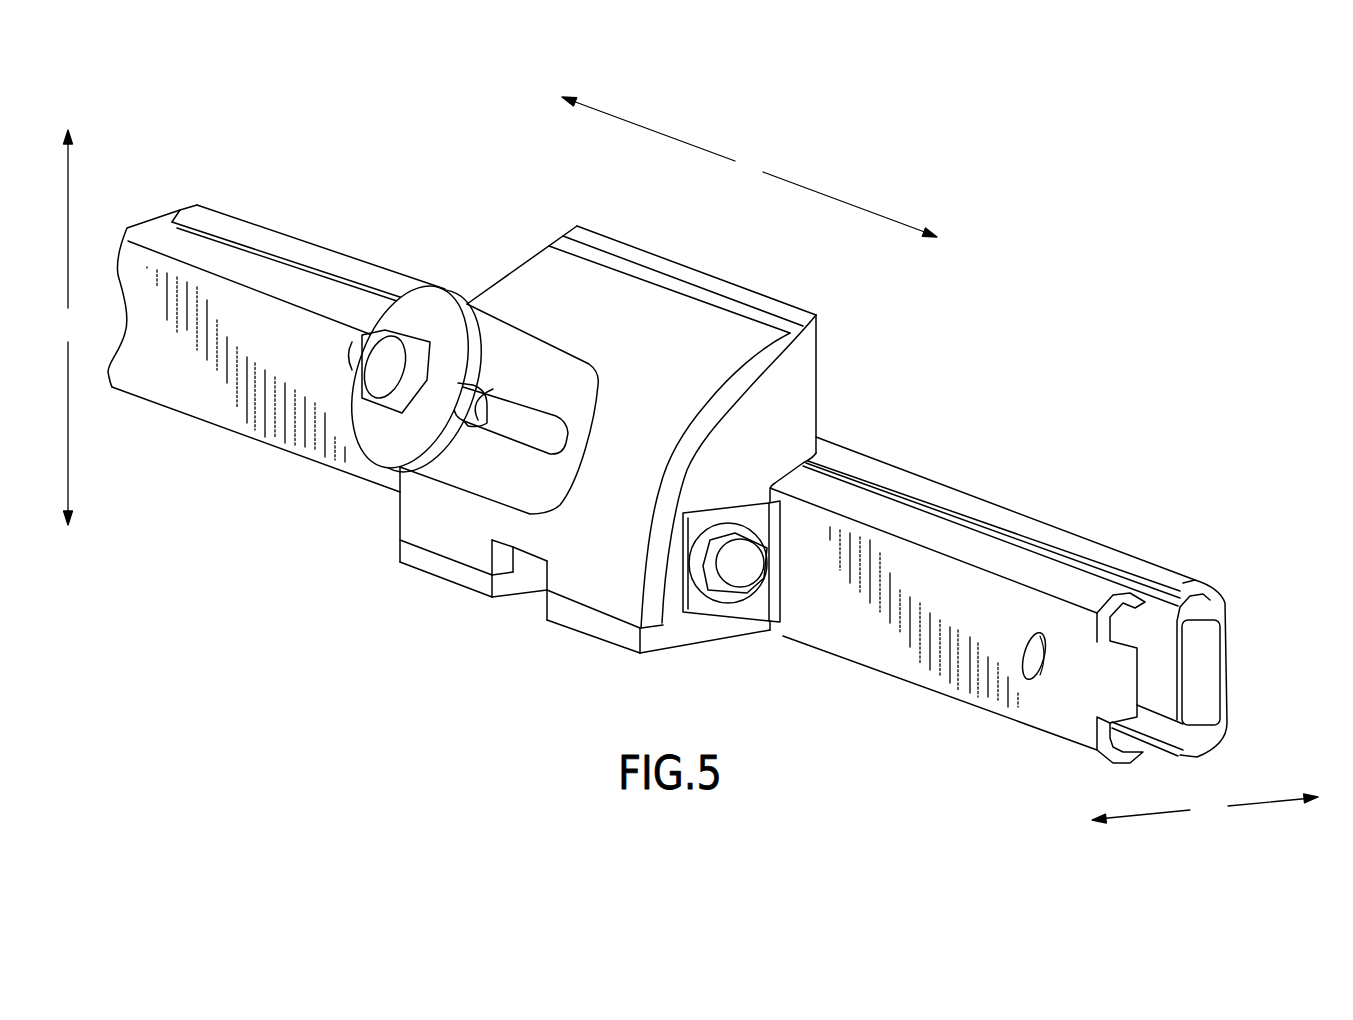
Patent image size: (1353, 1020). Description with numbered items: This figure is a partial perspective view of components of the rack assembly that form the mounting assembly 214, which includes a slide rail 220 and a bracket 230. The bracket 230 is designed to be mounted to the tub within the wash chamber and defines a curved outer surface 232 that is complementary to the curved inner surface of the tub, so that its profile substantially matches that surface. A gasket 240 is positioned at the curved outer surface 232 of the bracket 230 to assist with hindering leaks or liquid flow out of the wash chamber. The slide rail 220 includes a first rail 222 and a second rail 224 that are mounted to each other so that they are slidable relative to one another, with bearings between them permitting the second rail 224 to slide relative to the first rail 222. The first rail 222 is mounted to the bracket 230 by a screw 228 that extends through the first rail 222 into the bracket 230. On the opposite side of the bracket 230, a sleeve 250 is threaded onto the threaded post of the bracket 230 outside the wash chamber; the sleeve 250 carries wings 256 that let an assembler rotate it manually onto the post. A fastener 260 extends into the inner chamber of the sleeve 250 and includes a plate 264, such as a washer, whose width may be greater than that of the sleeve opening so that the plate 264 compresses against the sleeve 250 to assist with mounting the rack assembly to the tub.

The mounting assembly 214 is at (689, 460).
The slide rail 220 is at (167, 232).
The first rail 222 is at (1023, 617).
The second rail 224 is at (1195, 602).
The screw 228 is at (737, 573).
The bracket 230 is at (656, 442).
The curved outer surface 232 is at (720, 405).
The gasket 240 is at (522, 270).
The sleeve 250 is at (503, 414).
The wings 256 is at (523, 430).
The fastener 260 is at (380, 370).
The plate 264 is at (428, 302).